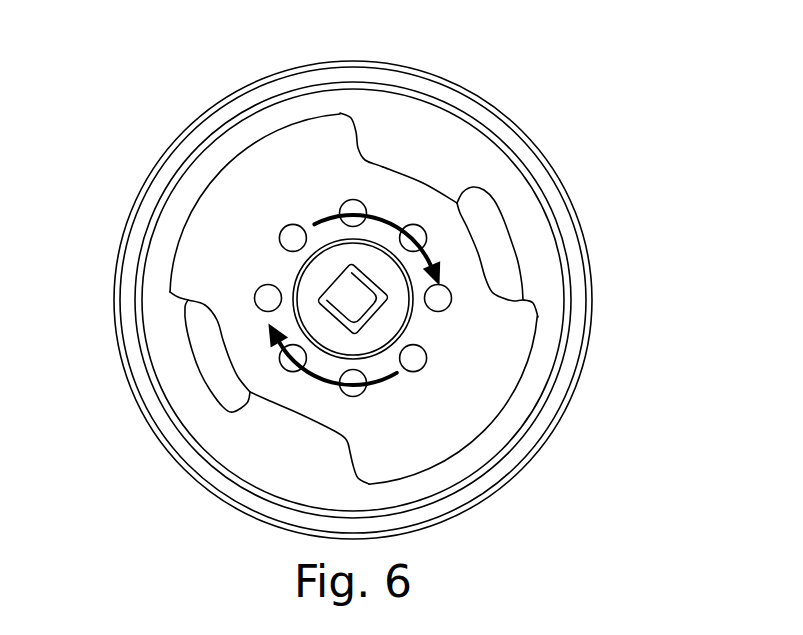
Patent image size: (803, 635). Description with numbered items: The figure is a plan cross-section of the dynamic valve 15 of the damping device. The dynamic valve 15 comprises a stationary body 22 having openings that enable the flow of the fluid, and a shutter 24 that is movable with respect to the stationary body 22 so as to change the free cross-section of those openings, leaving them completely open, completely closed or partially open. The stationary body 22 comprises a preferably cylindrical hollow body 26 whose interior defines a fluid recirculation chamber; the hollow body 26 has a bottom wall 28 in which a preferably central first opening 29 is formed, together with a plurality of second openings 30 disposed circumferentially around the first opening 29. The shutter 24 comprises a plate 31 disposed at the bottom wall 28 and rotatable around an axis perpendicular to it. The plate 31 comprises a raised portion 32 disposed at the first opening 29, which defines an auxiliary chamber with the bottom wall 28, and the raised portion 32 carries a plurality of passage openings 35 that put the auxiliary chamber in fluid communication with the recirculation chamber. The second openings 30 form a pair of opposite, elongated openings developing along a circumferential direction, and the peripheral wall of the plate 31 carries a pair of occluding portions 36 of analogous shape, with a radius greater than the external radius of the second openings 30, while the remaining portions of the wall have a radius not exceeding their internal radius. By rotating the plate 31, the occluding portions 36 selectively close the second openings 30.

The dynamic valve 15 is at (612, 257).
The stationary body 22 is at (247, 448).
The shutter 24 is at (346, 250).
The hollow body 26 is at (420, 120).
The bottom wall 28 is at (197, 395).
The first opening 29 is at (345, 288).
The second openings 30 is at (493, 228).
The plate 31 is at (230, 225).
The raised portion 32 is at (421, 203).
The passage openings 35 is at (293, 233).
The occluding portions 36 is at (235, 177).